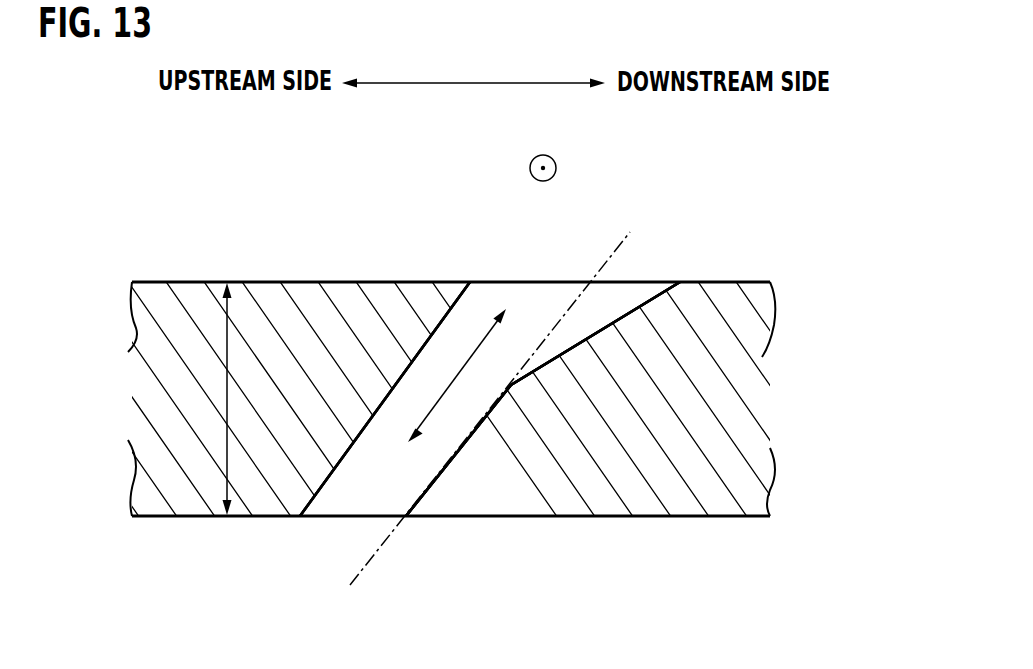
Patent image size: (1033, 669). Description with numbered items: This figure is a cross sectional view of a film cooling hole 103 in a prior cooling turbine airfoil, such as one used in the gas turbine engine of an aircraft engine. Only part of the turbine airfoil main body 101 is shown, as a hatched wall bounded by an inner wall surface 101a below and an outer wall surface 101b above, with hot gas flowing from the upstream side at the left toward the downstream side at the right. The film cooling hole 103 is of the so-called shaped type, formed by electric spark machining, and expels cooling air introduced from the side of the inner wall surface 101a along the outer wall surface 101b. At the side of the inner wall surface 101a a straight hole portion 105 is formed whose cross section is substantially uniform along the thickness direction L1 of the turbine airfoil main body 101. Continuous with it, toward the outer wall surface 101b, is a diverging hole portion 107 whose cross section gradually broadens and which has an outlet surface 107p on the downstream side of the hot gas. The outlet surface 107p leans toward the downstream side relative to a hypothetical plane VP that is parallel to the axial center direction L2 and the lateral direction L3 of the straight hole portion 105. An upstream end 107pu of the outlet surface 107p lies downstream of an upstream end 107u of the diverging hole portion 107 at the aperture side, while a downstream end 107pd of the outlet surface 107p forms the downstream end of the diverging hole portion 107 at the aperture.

The turbine airfoil main body 101 is at (189, 272).
The inner wall surface 101a is at (615, 517).
The outer wall surface 101b is at (720, 281).
The film cooling hole 103 is at (407, 196).
The straight hole portion 105 is at (366, 446).
The diverging hole portion 107 is at (445, 330).
The upstream end of diverging hole portion 107u is at (467, 281).
The outlet surface 107p is at (620, 316).
The upstream end of outlet surface 107pu is at (510, 383).
The downstream end of outlet surface 107pd is at (681, 281).
The thickness direction L1 is at (226, 455).
The axial center direction L2 is at (448, 392).
The lateral direction L3 is at (543, 153).
The hypothetical plane VP is at (613, 255).